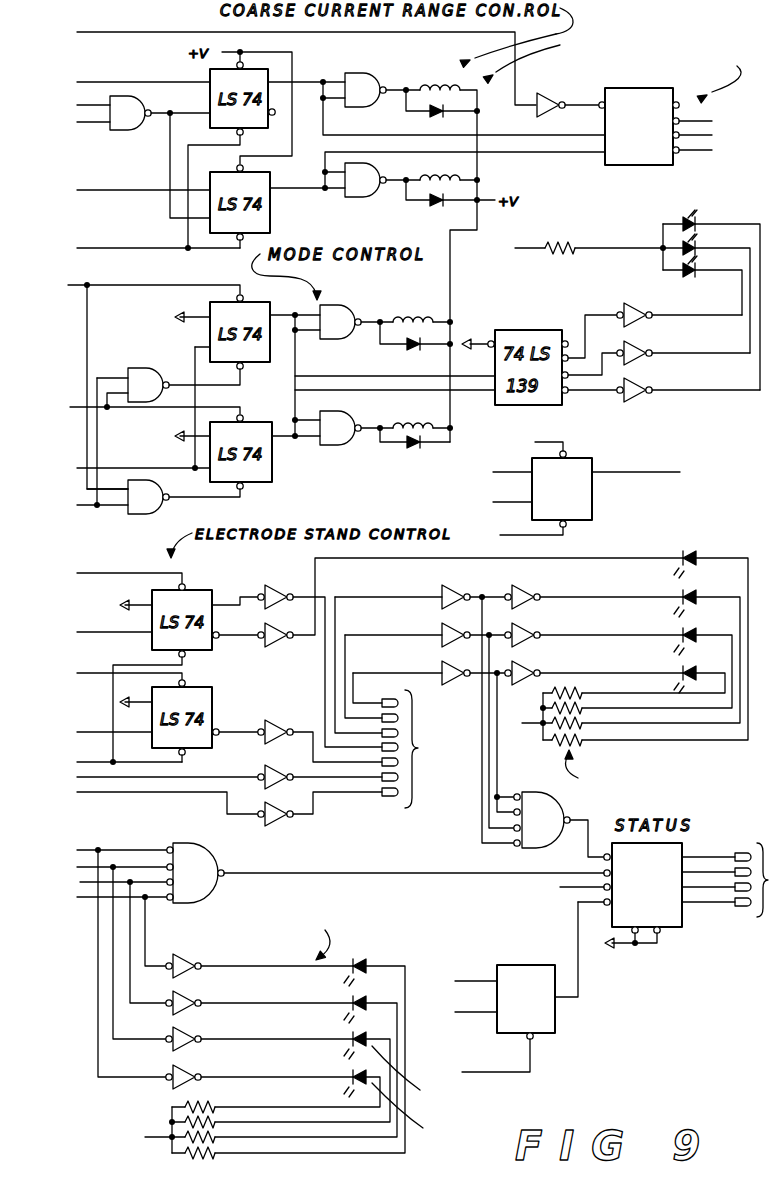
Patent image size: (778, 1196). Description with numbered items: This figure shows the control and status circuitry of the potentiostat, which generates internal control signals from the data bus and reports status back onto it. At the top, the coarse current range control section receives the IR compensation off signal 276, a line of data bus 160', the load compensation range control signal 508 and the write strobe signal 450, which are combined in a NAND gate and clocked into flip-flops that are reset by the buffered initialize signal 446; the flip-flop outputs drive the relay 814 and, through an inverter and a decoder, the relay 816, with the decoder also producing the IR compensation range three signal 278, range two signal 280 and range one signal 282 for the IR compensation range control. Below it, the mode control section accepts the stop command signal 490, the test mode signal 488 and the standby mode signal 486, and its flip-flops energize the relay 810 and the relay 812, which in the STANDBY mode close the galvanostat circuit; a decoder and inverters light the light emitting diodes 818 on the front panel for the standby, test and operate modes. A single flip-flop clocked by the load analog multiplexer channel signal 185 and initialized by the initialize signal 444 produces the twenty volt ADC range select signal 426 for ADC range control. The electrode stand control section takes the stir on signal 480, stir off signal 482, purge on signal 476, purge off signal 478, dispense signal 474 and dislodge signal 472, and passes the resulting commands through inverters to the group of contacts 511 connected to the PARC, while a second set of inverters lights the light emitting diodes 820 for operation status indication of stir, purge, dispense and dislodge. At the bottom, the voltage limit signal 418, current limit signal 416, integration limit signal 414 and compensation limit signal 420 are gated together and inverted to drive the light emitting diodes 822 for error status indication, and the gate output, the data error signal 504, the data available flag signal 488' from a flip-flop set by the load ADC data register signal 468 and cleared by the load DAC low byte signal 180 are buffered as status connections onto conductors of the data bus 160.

The IR compensation off signal 276 is at (132, 32).
The relay 816 is at (600, 86).
The IR compensation range three signal 278 is at (708, 121).
The IR compensation range two signal 280 is at (710, 135).
The IR compensation range one signal 282 is at (708, 150).
The line of data bus 160' is at (304, 262).
The data bus 160 is at (691, 910).
The load compensation range control signal 508 is at (85, 105).
The write strobe signal 450 is at (90, 122).
The buffered initialize signal 446 is at (135, 248).
The relay 814 is at (463, 176).
The light emitting diodes 818 is at (697, 208).
The stop command signal 490 is at (80, 285).
The test mode signal 488 is at (140, 436).
The standby mode signal 486 is at (107, 468).
The relay 810 is at (420, 306).
The relay 812 is at (388, 448).
The twenty volt ADC range select signal 426 is at (645, 472).
The load analog multiplexer channel signal 185 is at (505, 502).
The initialize signal 444 is at (505, 535).
The stir on signal 480 is at (135, 572).
The stir off signal 482 is at (112, 632).
The purge on signal 476 is at (97, 673).
The purge off signal 478 is at (97, 732).
The dispense signal 474 is at (205, 777).
The dislodge signal 472 is at (85, 792).
The contacts 511 is at (417, 749).
The light emitting diodes 820 is at (670, 540).
The data error signal 504 is at (558, 887).
The data available flag signal 488' is at (591, 952).
The load ADC data register signal 468 is at (475, 1015).
The load DAC low byte signal 180 is at (490, 1072).
The voltage limit signal 418 is at (88, 850).
The current limit signal 416 is at (77, 852).
The integration limit signal 414 is at (77, 880).
The compensation limit signal 420 is at (80, 898).
The light emitting diodes 822 is at (342, 963).